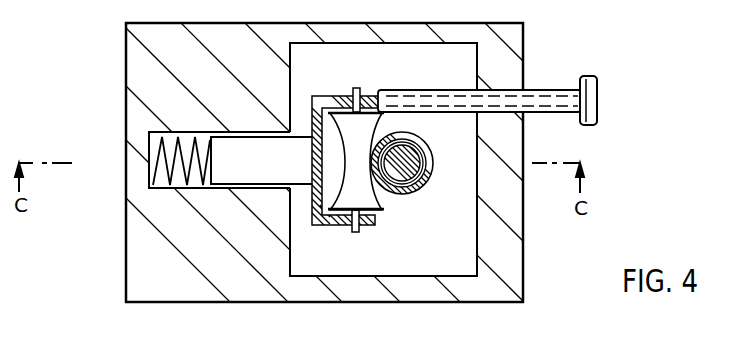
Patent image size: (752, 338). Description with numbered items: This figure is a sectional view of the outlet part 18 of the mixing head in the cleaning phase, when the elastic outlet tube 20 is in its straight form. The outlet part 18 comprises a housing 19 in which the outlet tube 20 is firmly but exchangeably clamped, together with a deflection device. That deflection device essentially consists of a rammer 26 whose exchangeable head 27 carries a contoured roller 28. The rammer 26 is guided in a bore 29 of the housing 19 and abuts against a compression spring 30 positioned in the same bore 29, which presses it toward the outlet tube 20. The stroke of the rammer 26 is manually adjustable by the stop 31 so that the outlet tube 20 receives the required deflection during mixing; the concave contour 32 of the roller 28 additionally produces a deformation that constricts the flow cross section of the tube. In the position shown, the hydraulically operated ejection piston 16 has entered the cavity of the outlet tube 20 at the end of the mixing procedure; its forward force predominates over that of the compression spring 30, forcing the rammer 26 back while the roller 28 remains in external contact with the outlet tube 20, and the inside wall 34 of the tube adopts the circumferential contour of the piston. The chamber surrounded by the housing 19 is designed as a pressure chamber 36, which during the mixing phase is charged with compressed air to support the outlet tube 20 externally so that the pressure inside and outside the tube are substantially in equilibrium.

The ejection piston 16 is at (405, 158).
The outlet part 18 is at (525, 77).
The housing 19 is at (140, 279).
The outlet tube 20 is at (427, 170).
The rammer 26 is at (235, 173).
The exchangeable head 27 is at (316, 226).
The contoured roller 28 is at (346, 197).
The bore 29 is at (149, 189).
The compression spring 30 is at (152, 163).
The stop 31 is at (560, 100).
The concave contour 32 is at (378, 182).
The inside wall 34 is at (417, 188).
The pressure chamber 36 is at (463, 81).